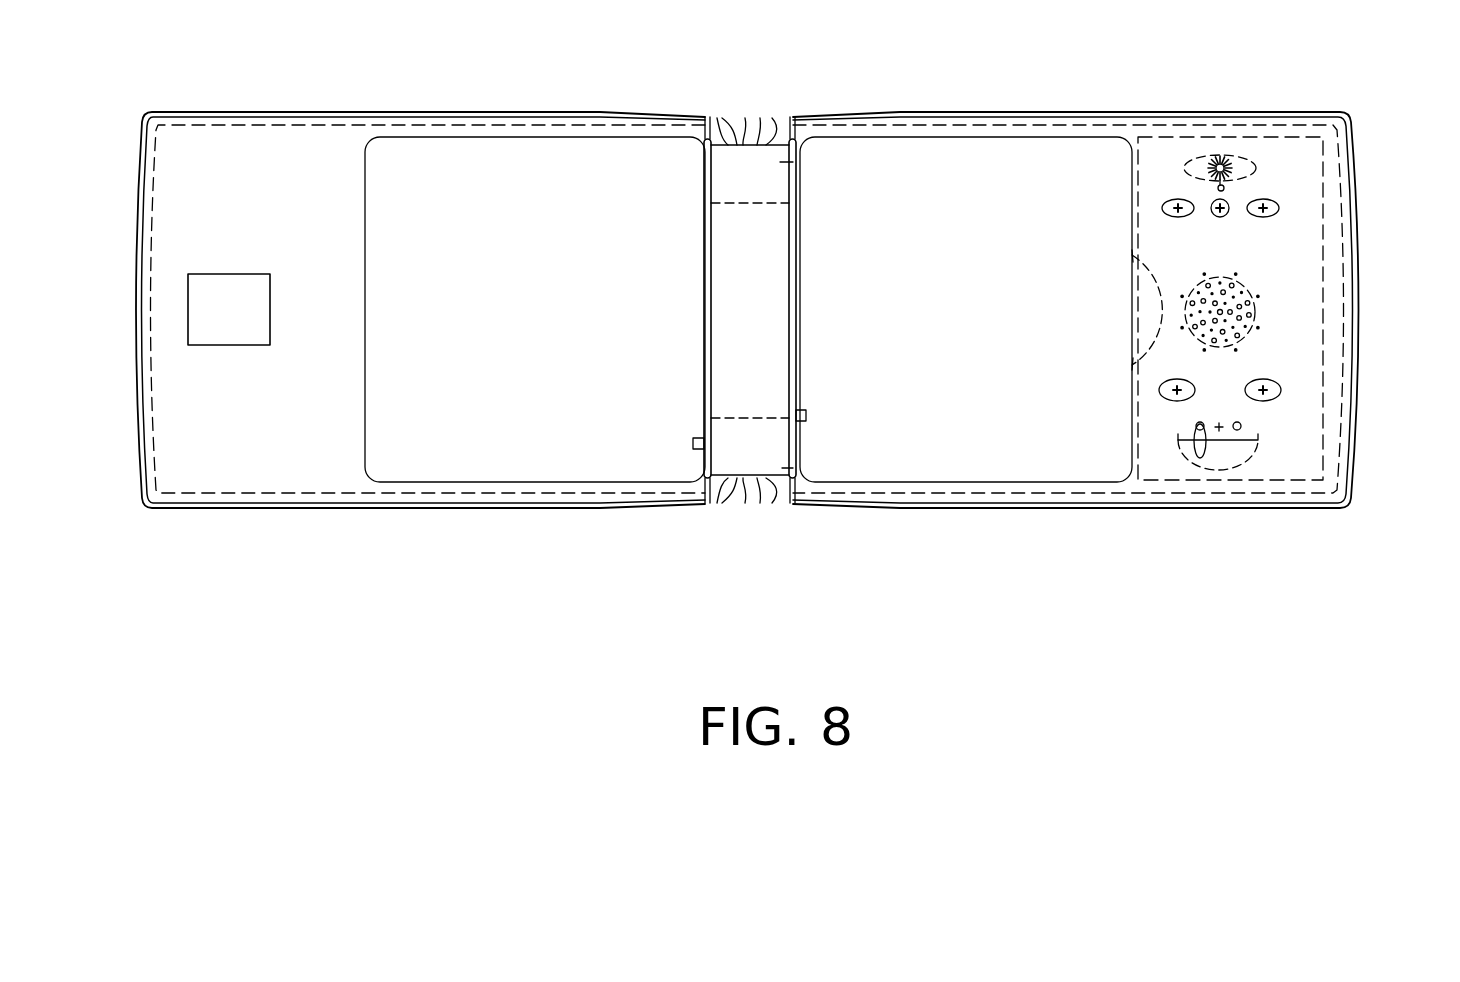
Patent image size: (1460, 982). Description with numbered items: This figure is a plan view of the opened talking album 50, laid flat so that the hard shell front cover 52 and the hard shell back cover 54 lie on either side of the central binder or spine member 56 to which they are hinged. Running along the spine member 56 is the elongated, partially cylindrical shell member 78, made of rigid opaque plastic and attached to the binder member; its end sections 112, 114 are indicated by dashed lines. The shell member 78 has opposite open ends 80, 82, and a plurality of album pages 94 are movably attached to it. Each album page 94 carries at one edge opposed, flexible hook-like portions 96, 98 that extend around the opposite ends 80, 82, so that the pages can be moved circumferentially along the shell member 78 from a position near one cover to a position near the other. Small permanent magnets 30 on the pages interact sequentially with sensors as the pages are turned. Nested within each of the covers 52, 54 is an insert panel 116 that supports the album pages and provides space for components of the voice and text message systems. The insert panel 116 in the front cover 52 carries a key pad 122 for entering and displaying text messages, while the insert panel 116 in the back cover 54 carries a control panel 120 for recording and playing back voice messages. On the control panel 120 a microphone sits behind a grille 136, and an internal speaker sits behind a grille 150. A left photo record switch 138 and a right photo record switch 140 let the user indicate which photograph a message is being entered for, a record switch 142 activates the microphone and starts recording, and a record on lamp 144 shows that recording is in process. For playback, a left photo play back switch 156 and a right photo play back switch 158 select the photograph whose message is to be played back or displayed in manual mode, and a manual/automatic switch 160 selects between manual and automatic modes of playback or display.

The permanent magnet 30 is at (693, 443).
The album 50 is at (208, 560).
The hard shell front cover 52 is at (370, 508).
The hard shell back cover 54 is at (995, 508).
The central binder or spine member 56 is at (737, 127).
The shell member 78 is at (752, 325).
The open end 80 is at (750, 140).
The open end 82 is at (752, 508).
The album page 94 is at (447, 472).
The hook-like portion 96 is at (716, 128).
The hook-like portion 98 is at (712, 508).
The end section 112 is at (791, 165).
The end section 114 is at (797, 472).
The insert panel 116 is at (257, 133).
The control panel 120 is at (1285, 283).
The key pad 122 is at (262, 302).
The grille 136 is at (1228, 158).
The left photo record switch 138 is at (1178, 217).
The right photo record switch 140 is at (1283, 200).
The record switch 142 is at (1229, 211).
The record on lamp 144 is at (1216, 189).
The grille 150 is at (1258, 312).
The left photo play back switch 156 is at (1159, 390).
The right photo play back switch 158 is at (1281, 390).
The manual/automatic switch 160 is at (1214, 456).